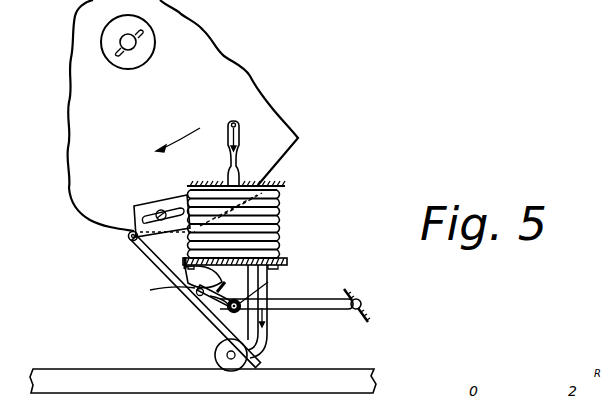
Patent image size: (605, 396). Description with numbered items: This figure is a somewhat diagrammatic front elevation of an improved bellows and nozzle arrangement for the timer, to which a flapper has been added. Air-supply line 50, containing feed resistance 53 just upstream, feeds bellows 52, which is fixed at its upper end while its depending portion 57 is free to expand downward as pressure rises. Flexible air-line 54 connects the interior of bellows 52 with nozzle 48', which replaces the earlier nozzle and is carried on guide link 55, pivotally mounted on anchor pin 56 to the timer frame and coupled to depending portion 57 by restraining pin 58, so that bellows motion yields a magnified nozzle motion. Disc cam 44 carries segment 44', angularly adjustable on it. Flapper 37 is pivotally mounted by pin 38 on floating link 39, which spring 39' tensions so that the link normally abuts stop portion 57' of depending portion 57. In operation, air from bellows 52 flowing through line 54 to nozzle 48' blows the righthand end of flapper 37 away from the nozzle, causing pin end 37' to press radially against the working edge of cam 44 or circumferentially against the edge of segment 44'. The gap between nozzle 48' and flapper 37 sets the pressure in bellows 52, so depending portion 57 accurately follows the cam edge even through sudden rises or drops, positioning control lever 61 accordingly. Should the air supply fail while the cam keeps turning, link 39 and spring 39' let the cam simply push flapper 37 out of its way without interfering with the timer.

The flapper 37 is at (196, 302).
The pin end of flapper 37' is at (119, 250).
The pin 38 is at (203, 278).
The floating link 39 is at (199, 297).
The spring 39' is at (193, 314).
The disc cam 44 is at (132, 235).
The cam segment 44' is at (141, 216).
The nozzle 48' is at (275, 311).
The air-supply line 50 is at (240, 141).
The bellows 52 is at (282, 236).
The feed resistance 53 is at (238, 163).
The flexible air-line 54 is at (262, 300).
The guide link 55 is at (352, 300).
The anchor pin 56 is at (364, 292).
The depending portion of bellows 57 is at (207, 355).
The stop portion 57' is at (142, 301).
The restraining pin 58 is at (270, 281).
The control lever 61 is at (302, 369).